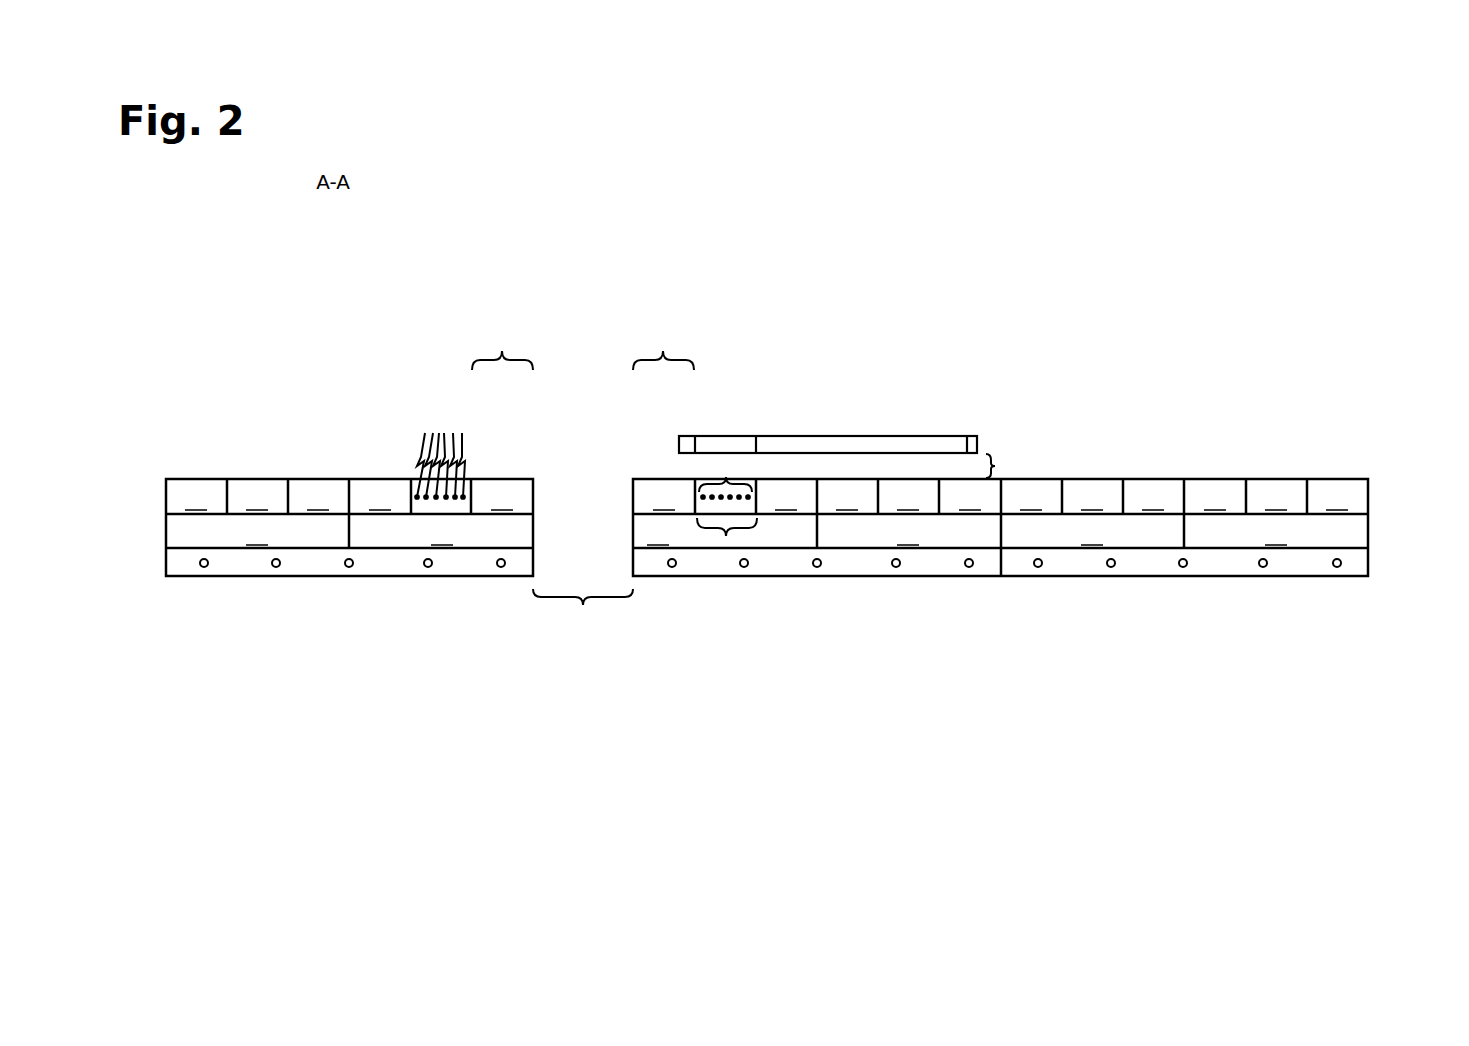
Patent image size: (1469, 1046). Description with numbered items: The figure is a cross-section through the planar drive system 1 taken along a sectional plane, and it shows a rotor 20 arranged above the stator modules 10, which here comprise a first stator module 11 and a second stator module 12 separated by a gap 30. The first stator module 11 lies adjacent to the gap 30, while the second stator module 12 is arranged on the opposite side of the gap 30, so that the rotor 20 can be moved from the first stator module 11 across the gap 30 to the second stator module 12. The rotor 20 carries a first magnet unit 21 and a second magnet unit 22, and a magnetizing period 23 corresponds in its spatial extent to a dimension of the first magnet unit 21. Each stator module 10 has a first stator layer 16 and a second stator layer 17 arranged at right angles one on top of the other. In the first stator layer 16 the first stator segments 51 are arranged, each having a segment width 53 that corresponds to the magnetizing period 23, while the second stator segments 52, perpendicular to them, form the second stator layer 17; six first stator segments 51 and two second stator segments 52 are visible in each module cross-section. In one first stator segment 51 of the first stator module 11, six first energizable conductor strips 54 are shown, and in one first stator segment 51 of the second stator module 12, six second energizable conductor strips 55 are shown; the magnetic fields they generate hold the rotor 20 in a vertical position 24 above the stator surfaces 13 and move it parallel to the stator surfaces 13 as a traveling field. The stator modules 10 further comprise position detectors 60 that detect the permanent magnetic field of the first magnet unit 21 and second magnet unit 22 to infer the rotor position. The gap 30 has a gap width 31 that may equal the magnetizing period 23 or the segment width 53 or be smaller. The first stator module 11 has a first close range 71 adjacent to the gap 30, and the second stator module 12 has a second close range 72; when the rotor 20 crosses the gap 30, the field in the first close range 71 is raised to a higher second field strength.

The planar drive system 1 is at (1219, 204).
The stator module 10 is at (303, 578).
The first stator module 11 is at (929, 578).
The second stator module 12 is at (388, 578).
The stator surface 13 is at (240, 478).
The first stator layer 16 is at (166, 499).
The second stator layer 17 is at (166, 532).
The rotor 20 is at (923, 436).
The first magnet unit 21 is at (740, 447).
The second magnet unit 22 is at (828, 445).
The magnetizing period 23 is at (694, 428).
The vertical position 24 is at (1009, 466).
The gap 30 is at (568, 566).
The gap width 31 is at (583, 614).
The first stator segment 51 is at (460, 503).
The second stator segment 52 is at (767, 531).
The segment width 53 is at (726, 536).
The first energizable conductor strips 54 is at (726, 479).
The second energizable conductor strips 55 is at (440, 451).
The position detector 60 is at (204, 567).
The first close range 71 is at (663, 343).
The second close range 72 is at (502, 343).